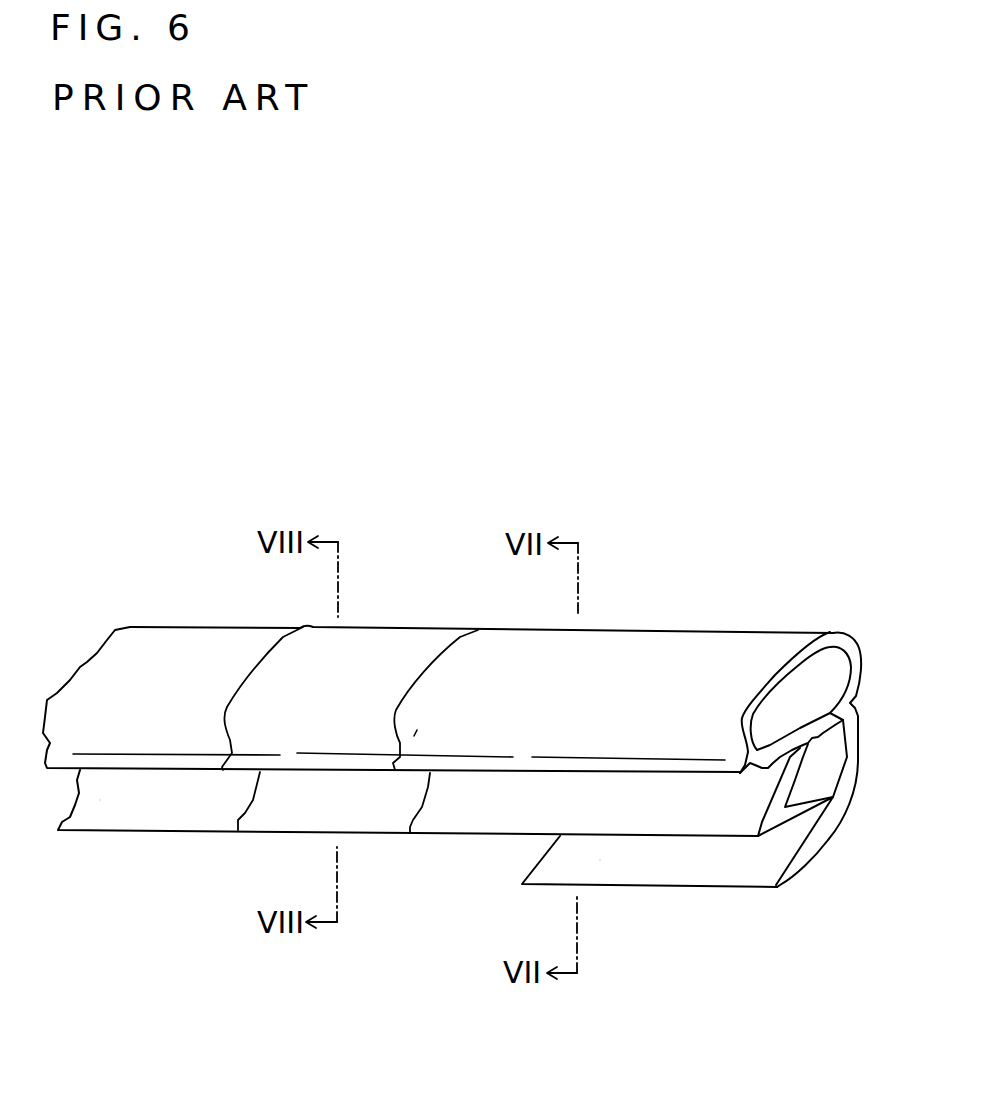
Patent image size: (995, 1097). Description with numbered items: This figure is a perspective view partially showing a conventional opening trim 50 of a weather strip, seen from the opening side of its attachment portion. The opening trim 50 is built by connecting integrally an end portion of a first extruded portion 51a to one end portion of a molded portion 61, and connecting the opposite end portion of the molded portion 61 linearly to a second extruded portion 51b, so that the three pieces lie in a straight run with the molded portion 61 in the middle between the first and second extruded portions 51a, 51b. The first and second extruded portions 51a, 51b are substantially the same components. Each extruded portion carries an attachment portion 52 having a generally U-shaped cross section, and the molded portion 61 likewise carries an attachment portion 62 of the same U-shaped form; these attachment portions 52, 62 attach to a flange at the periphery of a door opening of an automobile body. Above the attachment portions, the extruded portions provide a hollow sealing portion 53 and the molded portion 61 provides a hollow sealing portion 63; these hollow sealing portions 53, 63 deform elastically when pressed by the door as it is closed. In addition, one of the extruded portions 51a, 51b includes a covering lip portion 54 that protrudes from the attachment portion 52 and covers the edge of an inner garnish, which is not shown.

The opening trim 50 is at (779, 596).
The first extruded portion 51a is at (175, 625).
The second extruded portion 51b is at (630, 630).
The attachment portion 52 is at (147, 818).
The hollow sealing portion 53 is at (238, 640).
The covering lip portion 54 is at (685, 865).
The molded portion 61 is at (377, 625).
The attachment portion 62 is at (260, 823).
The hollow sealing portion 63 is at (447, 638).